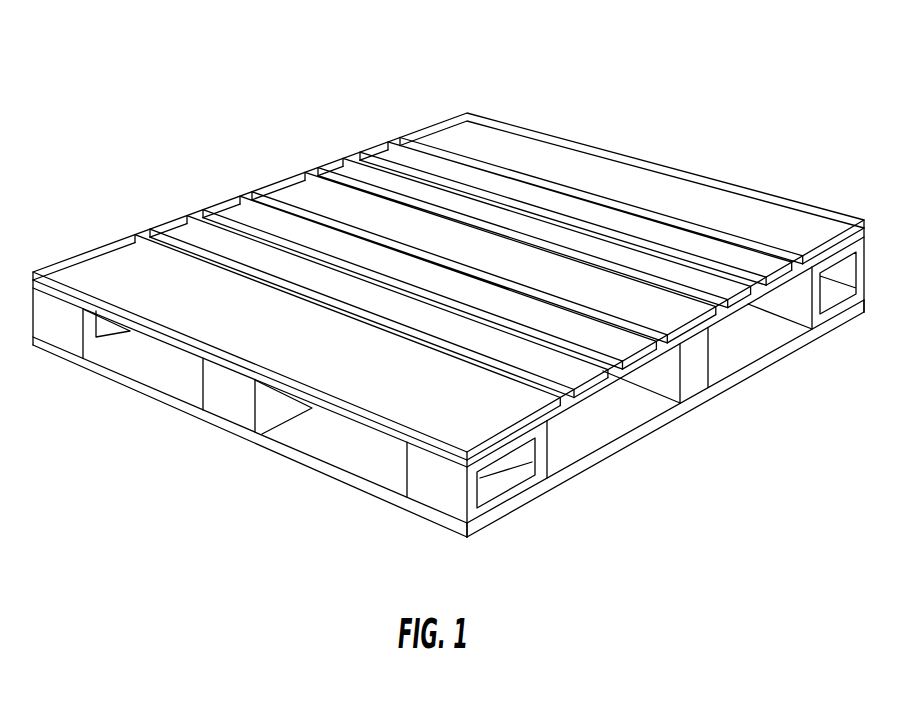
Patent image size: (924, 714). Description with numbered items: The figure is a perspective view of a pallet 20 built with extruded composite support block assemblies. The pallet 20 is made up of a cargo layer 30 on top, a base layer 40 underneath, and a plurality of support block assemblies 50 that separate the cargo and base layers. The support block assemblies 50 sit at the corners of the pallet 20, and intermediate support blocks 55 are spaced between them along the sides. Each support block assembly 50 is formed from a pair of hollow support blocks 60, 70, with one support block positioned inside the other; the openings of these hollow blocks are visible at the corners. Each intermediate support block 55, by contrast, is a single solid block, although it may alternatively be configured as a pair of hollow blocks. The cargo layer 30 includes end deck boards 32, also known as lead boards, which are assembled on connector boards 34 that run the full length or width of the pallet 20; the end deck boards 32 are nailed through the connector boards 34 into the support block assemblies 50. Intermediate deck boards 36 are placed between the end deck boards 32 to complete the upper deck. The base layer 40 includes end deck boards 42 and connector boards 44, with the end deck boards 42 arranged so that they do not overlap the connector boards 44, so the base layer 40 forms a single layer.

The pallet 20 is at (118, 105).
The cargo layer 30 is at (470, 111).
The end deck boards 32 is at (603, 161).
The connector boards 34 is at (620, 392).
The intermediate deck boards 36 is at (273, 183).
The base layer 40 is at (47, 353).
The end deck boards 42 is at (143, 396).
The connector boards 44 is at (608, 463).
The support block assemblies 50 is at (410, 471).
The intermediate support blocks 55 is at (225, 398).
The hollow support block 60 is at (473, 517).
The hollow support block 70 is at (852, 272).